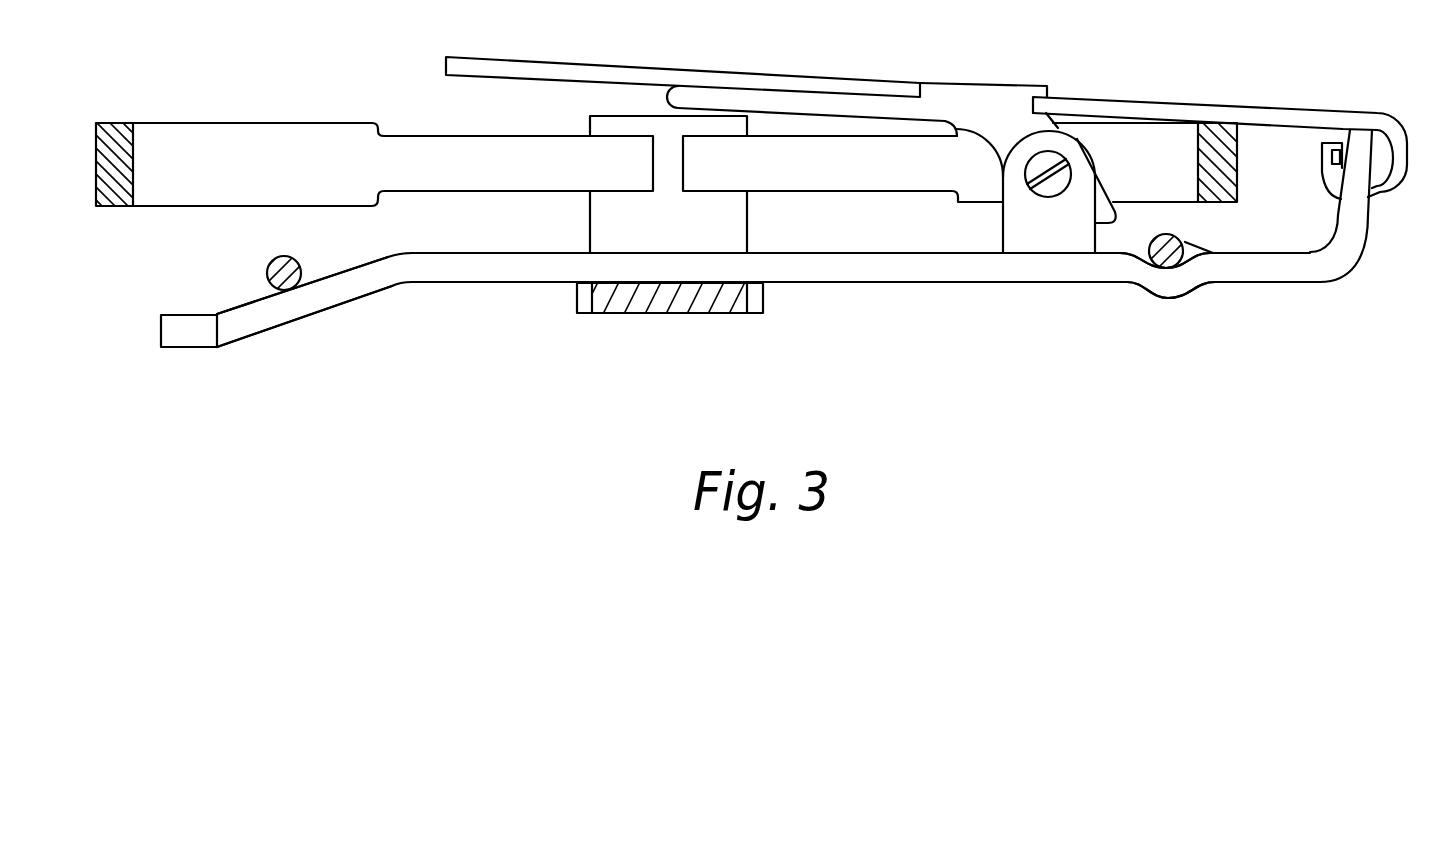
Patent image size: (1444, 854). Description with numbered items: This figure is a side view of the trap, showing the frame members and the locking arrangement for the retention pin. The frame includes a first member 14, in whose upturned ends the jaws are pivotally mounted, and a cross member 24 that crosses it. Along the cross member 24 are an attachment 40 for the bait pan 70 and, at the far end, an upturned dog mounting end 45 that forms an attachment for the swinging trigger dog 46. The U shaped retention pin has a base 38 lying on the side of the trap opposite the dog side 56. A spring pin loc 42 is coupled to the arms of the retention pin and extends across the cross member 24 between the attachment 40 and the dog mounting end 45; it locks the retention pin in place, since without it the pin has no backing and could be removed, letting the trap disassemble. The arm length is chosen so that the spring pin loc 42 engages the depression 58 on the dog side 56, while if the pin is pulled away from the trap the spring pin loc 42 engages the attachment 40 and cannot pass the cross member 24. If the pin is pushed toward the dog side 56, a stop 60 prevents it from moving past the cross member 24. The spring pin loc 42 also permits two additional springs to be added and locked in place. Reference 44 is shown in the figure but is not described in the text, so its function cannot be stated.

The first member 14 is at (745, 313).
The cross member 24 is at (270, 330).
The base 38 is at (266, 261).
The attachment 40 is at (1064, 235).
The spring pin loc 42 is at (1168, 262).
The spring arm 44 is at (397, 285).
The upturned dog mounting end 45 is at (1366, 243).
The swinging trigger dog 46 is at (1288, 105).
The dog side 56 is at (1186, 430).
The depression 58 is at (1142, 295).
The stop 60 is at (1207, 243).
The bait pan 70 is at (866, 74).